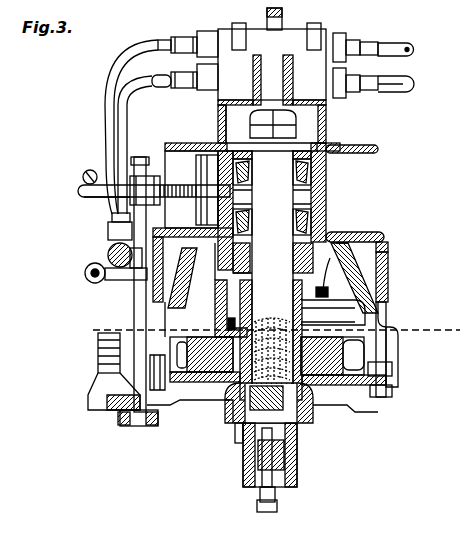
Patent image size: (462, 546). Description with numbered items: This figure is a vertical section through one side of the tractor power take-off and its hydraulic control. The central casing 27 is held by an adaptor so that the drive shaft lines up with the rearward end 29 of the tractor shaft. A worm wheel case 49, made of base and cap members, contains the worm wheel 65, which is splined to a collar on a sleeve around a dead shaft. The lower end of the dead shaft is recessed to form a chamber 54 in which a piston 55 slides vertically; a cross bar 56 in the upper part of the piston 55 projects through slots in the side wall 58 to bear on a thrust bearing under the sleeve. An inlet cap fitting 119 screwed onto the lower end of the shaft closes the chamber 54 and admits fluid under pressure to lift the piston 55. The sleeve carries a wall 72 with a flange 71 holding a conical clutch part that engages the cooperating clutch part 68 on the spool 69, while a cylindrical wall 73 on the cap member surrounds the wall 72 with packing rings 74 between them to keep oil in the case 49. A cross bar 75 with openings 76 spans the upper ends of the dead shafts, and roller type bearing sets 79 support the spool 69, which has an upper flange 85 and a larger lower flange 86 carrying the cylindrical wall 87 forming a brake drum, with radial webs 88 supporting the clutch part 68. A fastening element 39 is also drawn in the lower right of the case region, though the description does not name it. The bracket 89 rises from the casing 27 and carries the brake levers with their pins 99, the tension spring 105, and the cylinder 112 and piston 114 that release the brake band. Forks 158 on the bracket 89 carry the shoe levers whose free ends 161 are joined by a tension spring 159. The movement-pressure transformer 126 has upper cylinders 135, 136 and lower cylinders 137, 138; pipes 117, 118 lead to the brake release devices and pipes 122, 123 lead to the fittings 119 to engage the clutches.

The central casing 27 is at (193, 398).
The rearward end 29 is at (88, 385).
The bolt 39 is at (388, 381).
The worm wheel case 49 is at (369, 348).
The chamber 54 is at (298, 445).
The piston 55 is at (243, 442).
The cross bar 56 is at (315, 414).
The side wall 58 is at (226, 427).
The worm wheel 65 is at (392, 366).
The clutch part 68 is at (368, 267).
The spool 69 is at (323, 218).
The flange 71 is at (380, 292).
The wall 72 is at (215, 320).
The cylindrical wall 73 is at (324, 325).
The packing rings 74 is at (134, 305).
The cross bar 75 is at (327, 130).
The openings 76 is at (219, 124).
The roller type bearing sets 79 is at (322, 170).
The upper flange 85 is at (378, 151).
The lower flange 86 is at (373, 232).
The cylindrical wall 87 is at (386, 247).
The radial webs 88 is at (388, 262).
The bracket 89 is at (165, 152).
The pin 99 is at (108, 228).
The tension spring 105 is at (86, 276).
The cylinder 112 is at (108, 249).
The piston 114 is at (128, 262).
The pipe 117 is at (112, 118).
The pipe 118 is at (116, 137).
The inlet cap fitting 119 is at (276, 494).
The pipe 122 is at (397, 45).
The pipe 123 is at (157, 74).
The movement-pressure transformer 126 is at (287, 33).
The cylinder 135 is at (208, 31).
The cylinder 136 is at (341, 33).
The cylinder 137 is at (220, 103).
The cylinder 138 is at (342, 95).
The forks 158 is at (168, 176).
The tension spring 159 is at (86, 173).
The free ends 161 is at (103, 197).